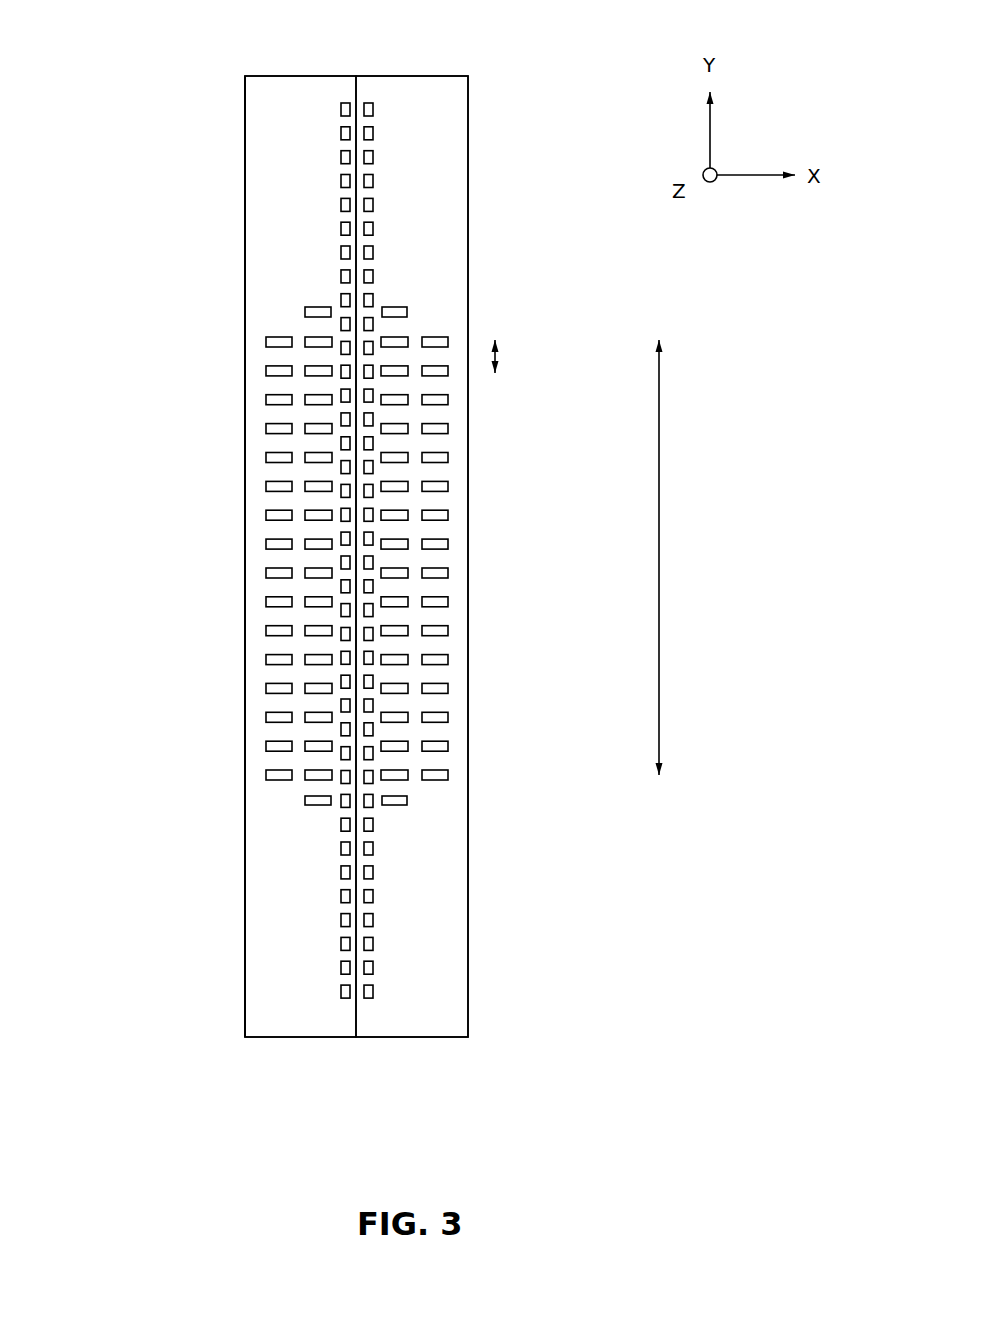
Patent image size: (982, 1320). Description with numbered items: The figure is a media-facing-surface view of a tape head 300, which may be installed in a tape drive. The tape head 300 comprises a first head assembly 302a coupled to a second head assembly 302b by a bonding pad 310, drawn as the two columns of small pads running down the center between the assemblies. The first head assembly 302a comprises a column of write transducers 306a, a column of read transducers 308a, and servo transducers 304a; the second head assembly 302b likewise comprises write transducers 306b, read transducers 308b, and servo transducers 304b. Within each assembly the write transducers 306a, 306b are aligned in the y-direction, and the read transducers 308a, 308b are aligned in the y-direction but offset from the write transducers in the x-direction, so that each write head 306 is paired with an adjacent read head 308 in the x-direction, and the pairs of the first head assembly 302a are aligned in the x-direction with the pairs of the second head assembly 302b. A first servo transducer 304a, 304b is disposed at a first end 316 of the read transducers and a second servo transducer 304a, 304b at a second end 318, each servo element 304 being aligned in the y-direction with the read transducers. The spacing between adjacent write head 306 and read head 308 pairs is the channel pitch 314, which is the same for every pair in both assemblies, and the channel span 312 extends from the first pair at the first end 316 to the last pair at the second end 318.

The tape head 300 is at (145, 26).
The first head assembly 302a is at (313, 128).
The second head assembly 302b is at (453, 128).
The servo element 304 is at (491, 565).
The servo transducer 304a is at (320, 306).
The servo transducer 304b is at (395, 306).
The write head 306 is at (478, 597).
The write transducer 306a is at (268, 372).
The write transducer 306b is at (442, 427).
The read head 308 is at (464, 617).
The read transducer 308a is at (313, 688).
The read transducer 308b is at (402, 655).
The bonding pad 310 is at (375, 893).
The channel span 312 is at (712, 557).
The channel pitch 314 is at (547, 367).
The first end 316 is at (225, 318).
The second end 318 is at (237, 788).